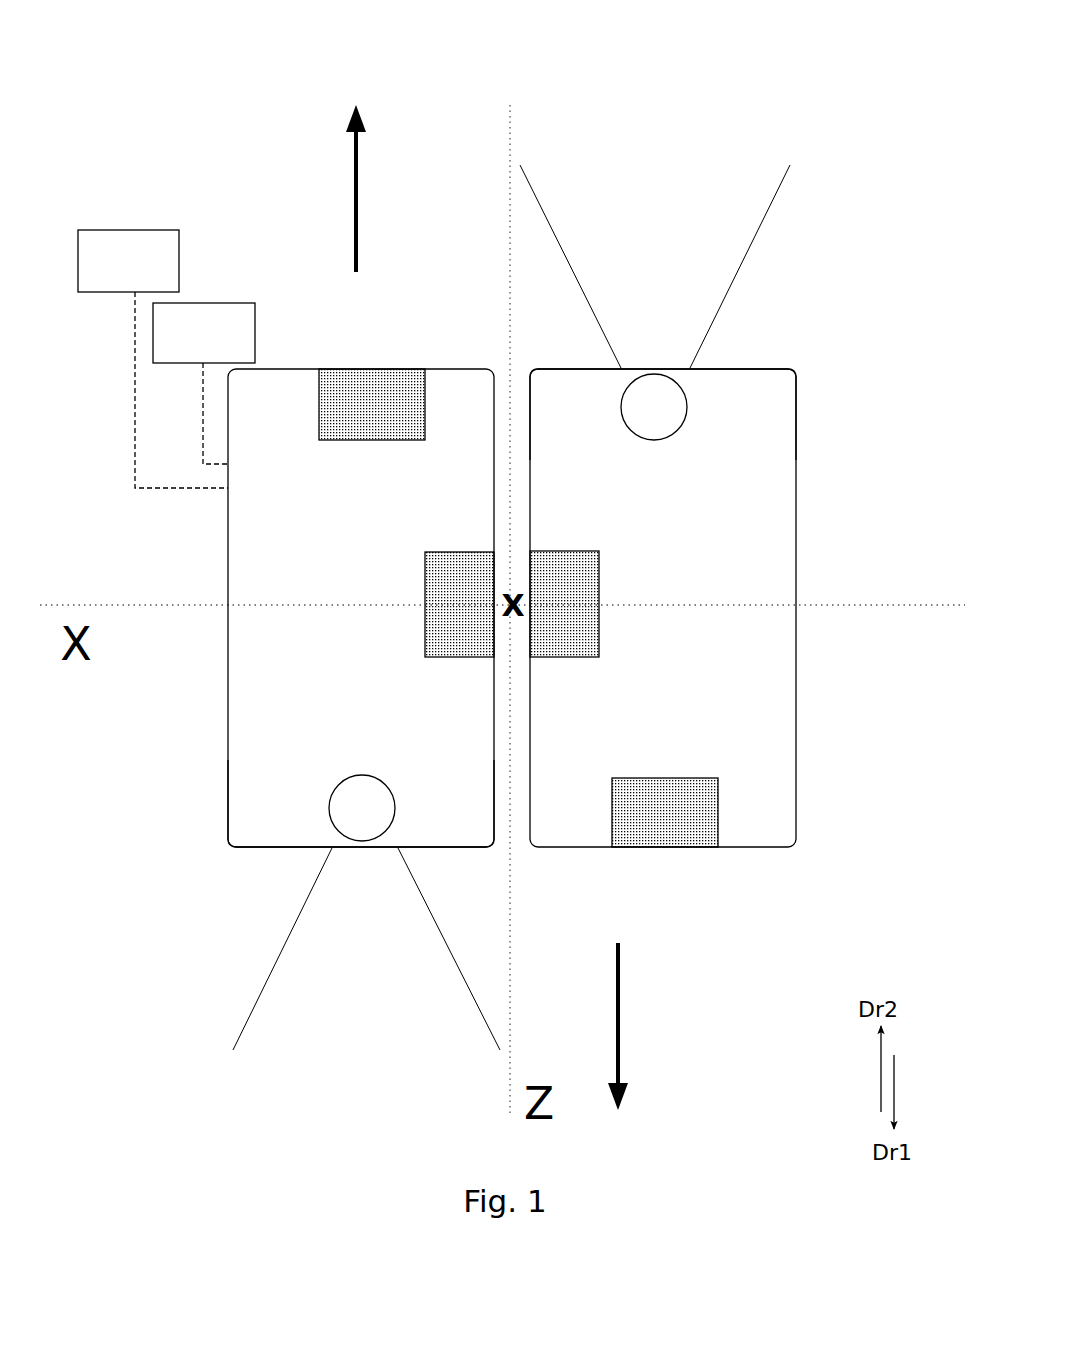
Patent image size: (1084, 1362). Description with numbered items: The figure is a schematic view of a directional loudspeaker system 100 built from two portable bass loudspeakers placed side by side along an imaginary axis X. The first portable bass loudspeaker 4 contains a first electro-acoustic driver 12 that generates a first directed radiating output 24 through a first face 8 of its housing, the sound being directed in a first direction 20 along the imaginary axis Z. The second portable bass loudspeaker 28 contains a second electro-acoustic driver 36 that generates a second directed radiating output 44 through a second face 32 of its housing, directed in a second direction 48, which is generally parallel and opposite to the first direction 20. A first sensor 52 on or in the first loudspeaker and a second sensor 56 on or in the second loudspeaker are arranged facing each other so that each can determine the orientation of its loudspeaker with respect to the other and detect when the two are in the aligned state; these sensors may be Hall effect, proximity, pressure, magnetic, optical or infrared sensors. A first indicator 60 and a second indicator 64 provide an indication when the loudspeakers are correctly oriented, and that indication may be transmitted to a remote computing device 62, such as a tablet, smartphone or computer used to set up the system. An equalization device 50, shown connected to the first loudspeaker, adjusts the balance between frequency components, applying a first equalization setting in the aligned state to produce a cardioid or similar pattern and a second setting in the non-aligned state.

The directional loudspeaker system 100 is at (808, 60).
The first portable bass loudspeaker 4 is at (222, 560).
The first face 8 is at (247, 856).
The first electro-acoustic driver 12 is at (314, 810).
The first directed radiating output 24 is at (339, 940).
The first indicator 60 is at (372, 404).
The first sensor 52 is at (459, 604).
The second portable bass loudspeaker 28 is at (805, 744).
The second face 32 is at (752, 352).
The second electro-acoustic driver 36 is at (702, 402).
The second directed radiating output 44 is at (598, 262).
The second sensor 56 is at (564, 604).
The second indicator 64 is at (665, 812).
The second direction 48 is at (375, 188).
The first direction 20 is at (605, 1026).
The remote computing device 62 is at (153, 359).
The equalization device 50 is at (204, 383).